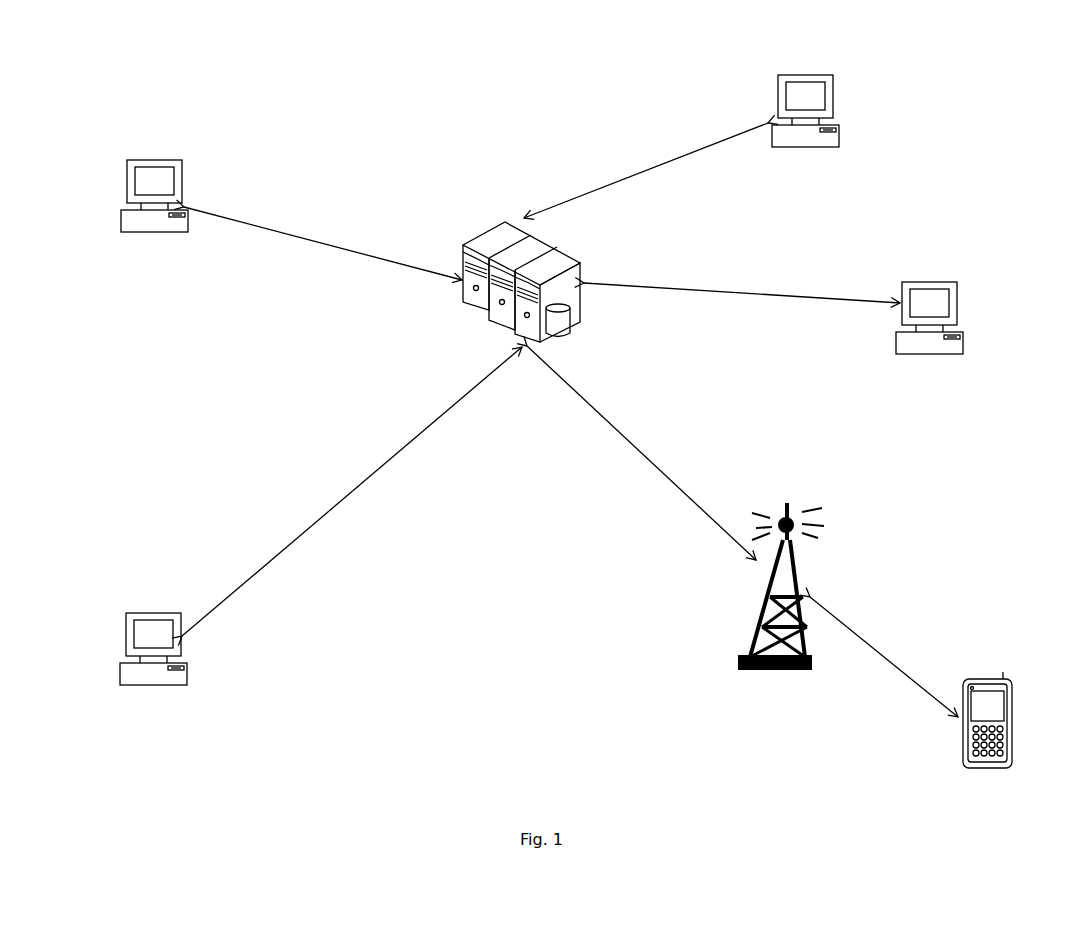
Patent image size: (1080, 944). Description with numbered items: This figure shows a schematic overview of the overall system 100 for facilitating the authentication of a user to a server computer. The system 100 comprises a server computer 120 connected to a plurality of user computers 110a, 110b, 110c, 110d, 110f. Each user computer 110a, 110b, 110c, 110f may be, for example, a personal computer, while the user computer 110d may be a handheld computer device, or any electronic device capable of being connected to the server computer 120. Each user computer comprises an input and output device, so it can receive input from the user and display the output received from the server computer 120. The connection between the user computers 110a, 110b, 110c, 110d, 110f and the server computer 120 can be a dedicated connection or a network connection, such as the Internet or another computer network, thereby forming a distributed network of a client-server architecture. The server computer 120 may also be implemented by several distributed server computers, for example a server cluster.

The overall system 100 is at (531, 123).
The user computer 110a is at (165, 161).
The user computer 110b is at (835, 95).
The user computer 110c is at (958, 303).
The user computer 110d is at (985, 680).
The user computer 110f is at (186, 682).
The server computer 120 is at (586, 284).